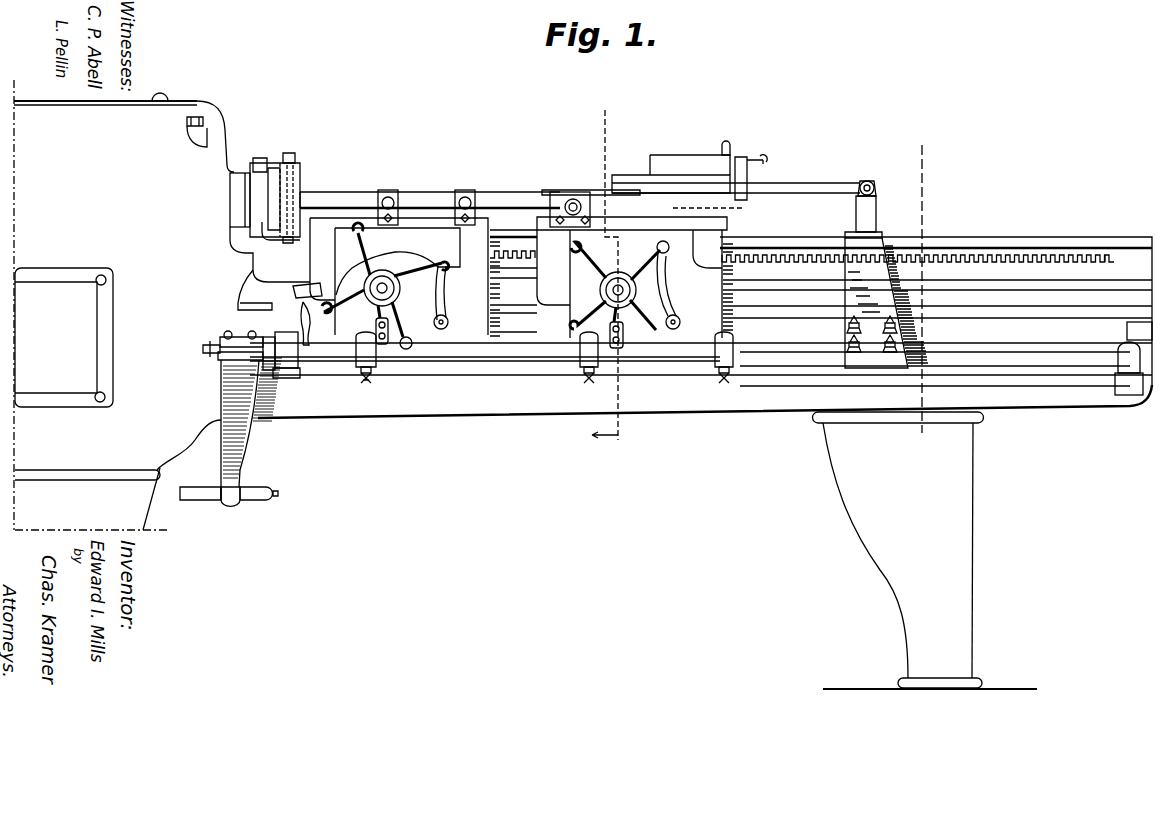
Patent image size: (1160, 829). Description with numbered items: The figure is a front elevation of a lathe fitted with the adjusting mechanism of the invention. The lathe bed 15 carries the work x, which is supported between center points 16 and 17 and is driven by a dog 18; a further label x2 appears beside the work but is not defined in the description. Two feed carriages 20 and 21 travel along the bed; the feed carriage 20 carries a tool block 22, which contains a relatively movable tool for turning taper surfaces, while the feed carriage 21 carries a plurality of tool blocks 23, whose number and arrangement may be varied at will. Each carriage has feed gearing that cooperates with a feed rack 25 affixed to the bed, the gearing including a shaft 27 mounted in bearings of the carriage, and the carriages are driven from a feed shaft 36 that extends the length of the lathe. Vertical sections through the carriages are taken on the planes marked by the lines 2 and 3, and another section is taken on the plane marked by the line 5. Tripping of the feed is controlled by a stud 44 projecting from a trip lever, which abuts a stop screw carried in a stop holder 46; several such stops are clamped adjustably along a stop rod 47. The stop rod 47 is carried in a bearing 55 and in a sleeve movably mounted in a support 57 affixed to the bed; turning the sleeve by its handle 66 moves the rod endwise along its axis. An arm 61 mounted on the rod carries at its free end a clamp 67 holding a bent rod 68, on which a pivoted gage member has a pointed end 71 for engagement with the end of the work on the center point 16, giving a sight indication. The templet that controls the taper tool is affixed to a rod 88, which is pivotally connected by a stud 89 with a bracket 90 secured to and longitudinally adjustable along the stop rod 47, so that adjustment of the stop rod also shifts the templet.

The section line 2— 2 is at (563, 289).
The section line 3— 3 is at (730, 206).
The section line 5— 5 is at (920, 287).
The bed 15 is at (1002, 236).
The center point 16 is at (277, 195).
The center point 17 is at (630, 208).
The dog 18 is at (297, 165).
The feed carriage 20 is at (629, 284).
The feed carriage 21 is at (399, 276).
The tool block 22 is at (578, 191).
The tool blocks 23 is at (388, 190).
The feed rack 25 is at (980, 262).
The shaft 27 is at (384, 286).
The feed shaft 36 is at (1088, 330).
The stud 44 is at (385, 342).
The stop holder 46 is at (362, 362).
The stop rod 47 is at (516, 352).
The bearing 55 is at (1128, 357).
The support 57 is at (287, 350).
The arm 61 is at (220, 388).
The handle 66 is at (300, 322).
The clamp 67 is at (230, 503).
The bent rod 68 is at (255, 486).
The pointed end 71 is at (289, 496).
The rod 88 is at (803, 183).
The stud 89 is at (867, 180).
The bracket 90 is at (877, 216).
The work x is at (323, 197).
The collar x2 is at (273, 207).